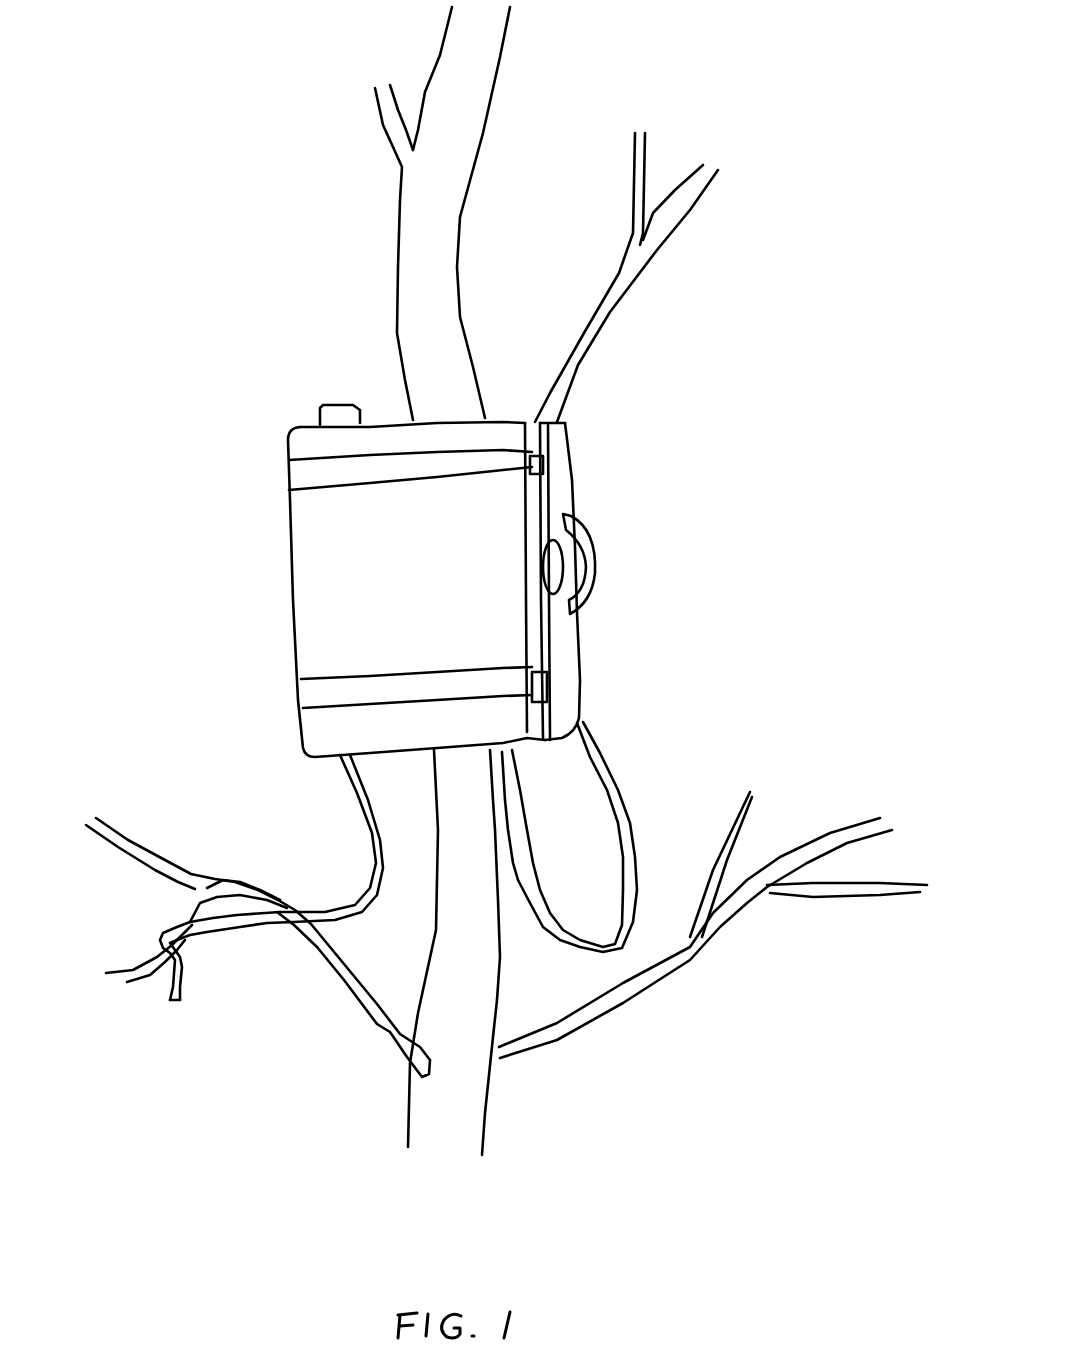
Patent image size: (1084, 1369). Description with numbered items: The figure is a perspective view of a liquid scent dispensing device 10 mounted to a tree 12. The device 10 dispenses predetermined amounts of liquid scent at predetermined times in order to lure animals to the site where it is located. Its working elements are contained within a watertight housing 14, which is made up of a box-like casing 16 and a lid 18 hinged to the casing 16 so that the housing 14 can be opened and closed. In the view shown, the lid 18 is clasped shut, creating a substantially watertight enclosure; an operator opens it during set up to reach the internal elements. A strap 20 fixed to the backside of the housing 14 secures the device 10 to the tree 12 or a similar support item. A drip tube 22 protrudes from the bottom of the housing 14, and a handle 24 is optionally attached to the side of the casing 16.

The liquid scent dispensing device 10 is at (445, 563).
The tree 12 is at (478, 1110).
The watertight housing 14 is at (583, 677).
The box-like casing 16 is at (563, 650).
The lid 18 is at (317, 582).
The strap 20 is at (618, 810).
The drip tube 22 is at (180, 970).
The handle 24 is at (595, 545).